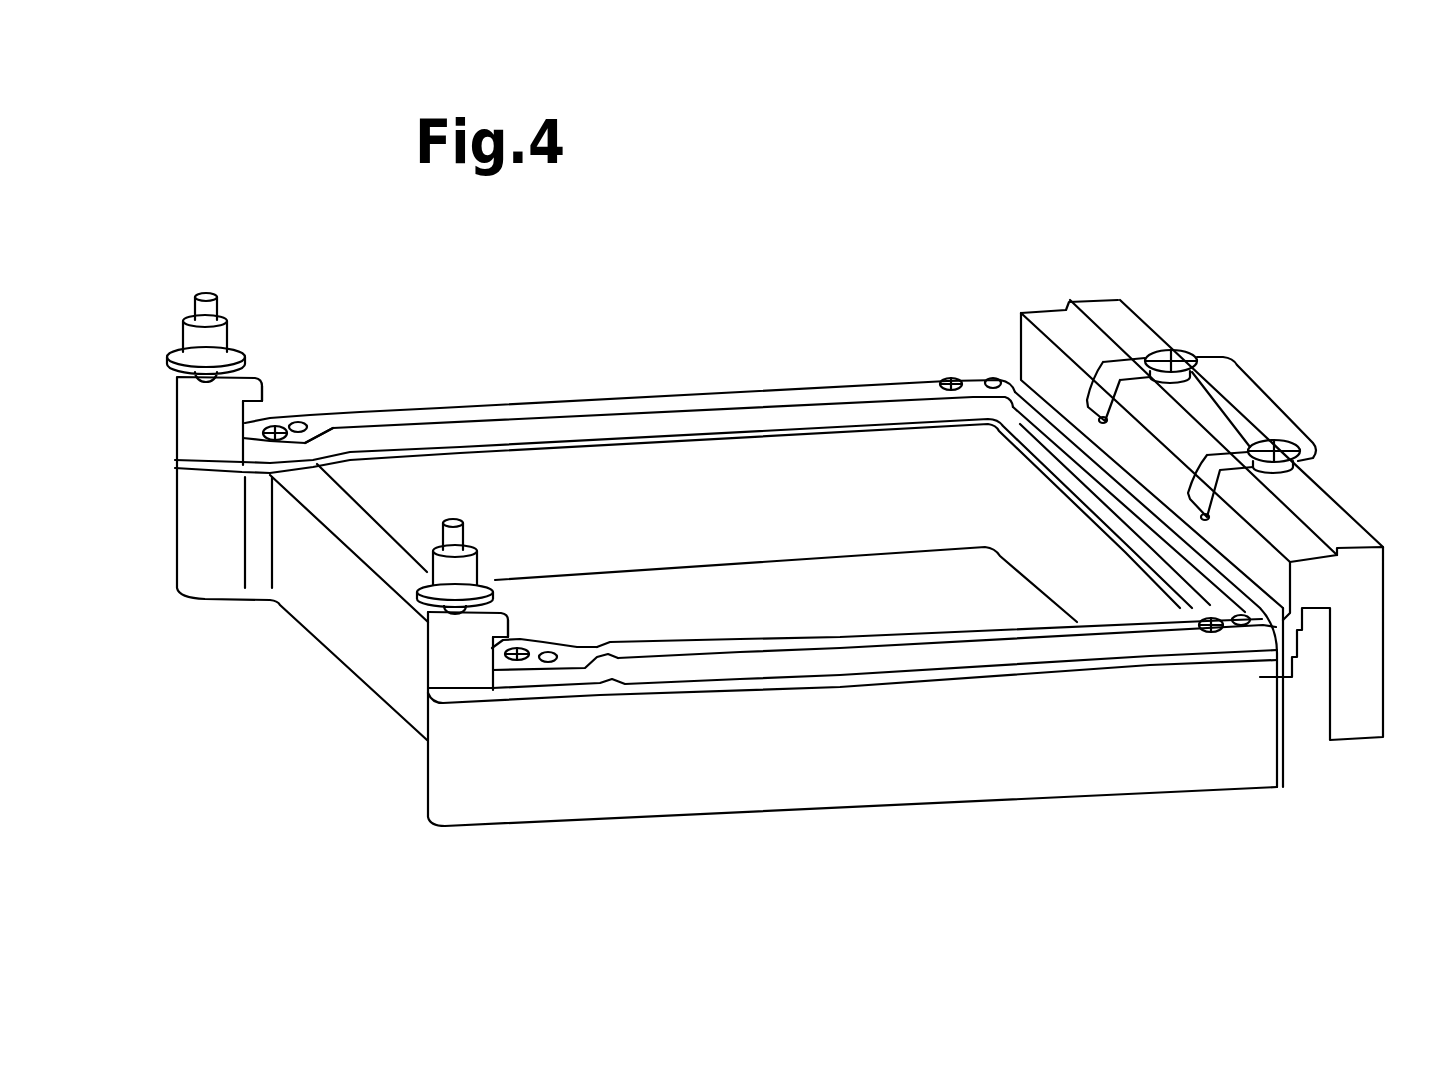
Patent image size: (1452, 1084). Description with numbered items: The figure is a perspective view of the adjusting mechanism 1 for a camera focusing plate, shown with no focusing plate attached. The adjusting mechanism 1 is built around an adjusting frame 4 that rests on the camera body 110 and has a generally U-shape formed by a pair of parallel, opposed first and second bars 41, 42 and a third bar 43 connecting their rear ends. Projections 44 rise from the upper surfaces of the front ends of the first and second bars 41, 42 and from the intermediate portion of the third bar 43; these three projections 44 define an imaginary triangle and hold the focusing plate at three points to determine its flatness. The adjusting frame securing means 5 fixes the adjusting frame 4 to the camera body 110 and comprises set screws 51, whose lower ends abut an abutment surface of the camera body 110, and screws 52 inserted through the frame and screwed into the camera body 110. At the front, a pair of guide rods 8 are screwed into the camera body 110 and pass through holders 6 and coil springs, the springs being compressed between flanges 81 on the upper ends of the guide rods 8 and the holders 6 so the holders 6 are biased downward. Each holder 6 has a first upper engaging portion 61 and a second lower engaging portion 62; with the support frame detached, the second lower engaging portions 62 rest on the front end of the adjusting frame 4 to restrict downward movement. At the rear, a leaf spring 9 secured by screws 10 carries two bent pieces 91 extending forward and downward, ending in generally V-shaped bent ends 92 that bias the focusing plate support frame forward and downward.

The adjusting mechanism 1 is at (806, 298).
The adjusting frame 4 is at (726, 593).
The first bar 41 is at (690, 424).
The second bar 42 is at (808, 662).
The third bar 43 is at (1055, 463).
The projection 44 is at (340, 418).
The adjusting frame securing means 5 is at (262, 466).
The set screw 51 is at (992, 376).
The screw 52 is at (948, 376).
The holder 6 is at (188, 412).
The first upper engaging portion 61 is at (258, 386).
The second lower engaging portion 62 is at (252, 430).
The guide rod 8 is at (207, 297).
The flange 81 is at (175, 352).
The leaf spring 9 is at (1250, 393).
The screw 10 is at (1173, 349).
The bent piece 91 is at (1096, 378).
The bent end 92 is at (1100, 418).
The camera body 110 is at (783, 775).